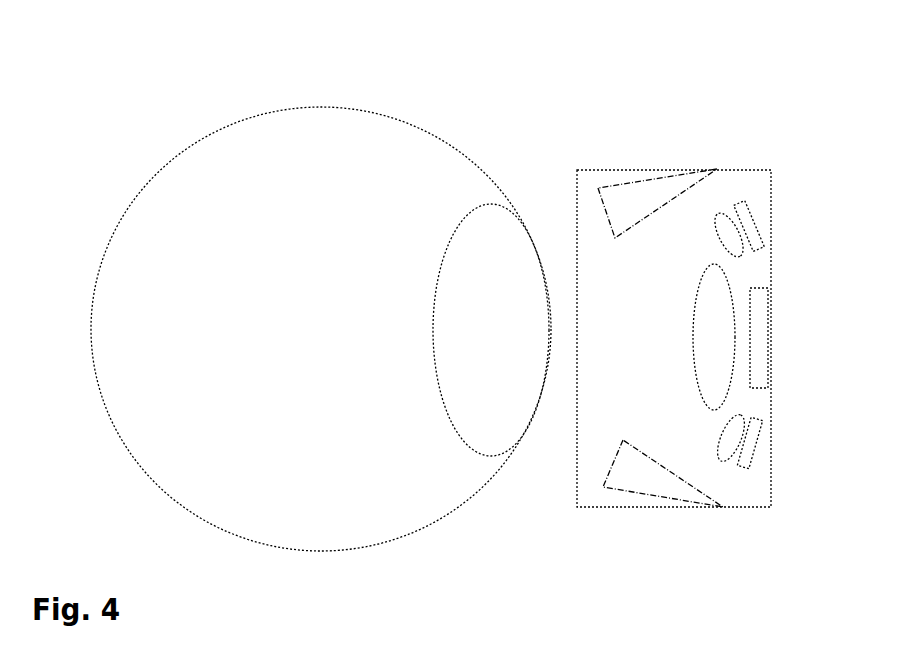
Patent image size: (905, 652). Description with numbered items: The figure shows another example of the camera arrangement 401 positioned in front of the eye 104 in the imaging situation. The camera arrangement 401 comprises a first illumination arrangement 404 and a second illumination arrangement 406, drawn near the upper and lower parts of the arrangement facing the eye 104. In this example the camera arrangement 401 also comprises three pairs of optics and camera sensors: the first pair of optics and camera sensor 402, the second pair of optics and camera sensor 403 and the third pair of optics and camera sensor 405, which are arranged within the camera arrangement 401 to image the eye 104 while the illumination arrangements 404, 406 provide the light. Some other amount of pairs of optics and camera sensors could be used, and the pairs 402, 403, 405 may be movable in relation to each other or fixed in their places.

The eye 104 is at (200, 142).
The camera arrangement 401 is at (593, 169).
The first pair of optics and camera sensor 402 is at (758, 338).
The second pair of optics and camera sensor 403 is at (740, 202).
The first illumination arrangement 404 is at (627, 193).
The third pair of optics and camera sensor 405 is at (742, 468).
The second illumination arrangement 406 is at (635, 493).